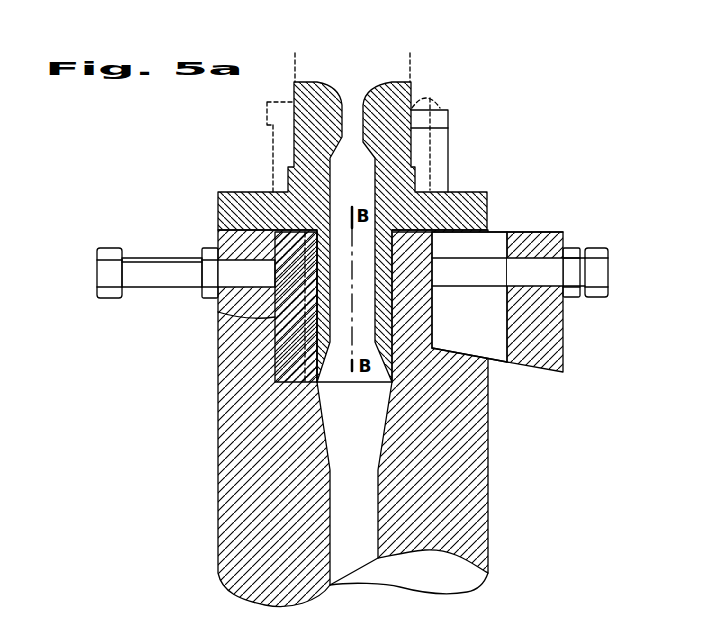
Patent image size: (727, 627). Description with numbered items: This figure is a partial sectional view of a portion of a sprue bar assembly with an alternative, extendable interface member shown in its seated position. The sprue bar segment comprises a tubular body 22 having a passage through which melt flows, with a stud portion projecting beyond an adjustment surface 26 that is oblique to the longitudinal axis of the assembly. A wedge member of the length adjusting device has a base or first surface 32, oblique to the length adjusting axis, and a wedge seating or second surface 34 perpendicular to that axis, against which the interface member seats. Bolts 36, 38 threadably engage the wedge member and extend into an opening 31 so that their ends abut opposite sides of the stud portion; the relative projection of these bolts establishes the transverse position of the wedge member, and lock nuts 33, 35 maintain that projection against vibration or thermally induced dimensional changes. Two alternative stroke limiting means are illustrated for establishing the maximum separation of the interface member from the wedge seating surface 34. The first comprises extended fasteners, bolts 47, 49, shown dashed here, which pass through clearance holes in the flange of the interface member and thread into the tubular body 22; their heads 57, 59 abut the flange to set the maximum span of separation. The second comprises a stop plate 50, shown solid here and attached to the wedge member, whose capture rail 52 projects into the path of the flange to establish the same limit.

The tubular body 22 is at (490, 438).
The adjustment surface 26 is at (500, 342).
The opening 31 is at (452, 327).
The base or first surface 32 is at (523, 365).
The lock nut 33 is at (573, 295).
The wedge seating or second surface 34 is at (492, 228).
The lock nut 35 is at (208, 297).
The bolt 36 is at (597, 252).
The bolt 38 is at (106, 293).
The bolt 47 is at (413, 163).
The bolt 49 is at (282, 163).
The stop plate 50 is at (438, 172).
The capture rail 52 is at (449, 116).
The head 57 is at (416, 108).
The head 59 is at (271, 115).